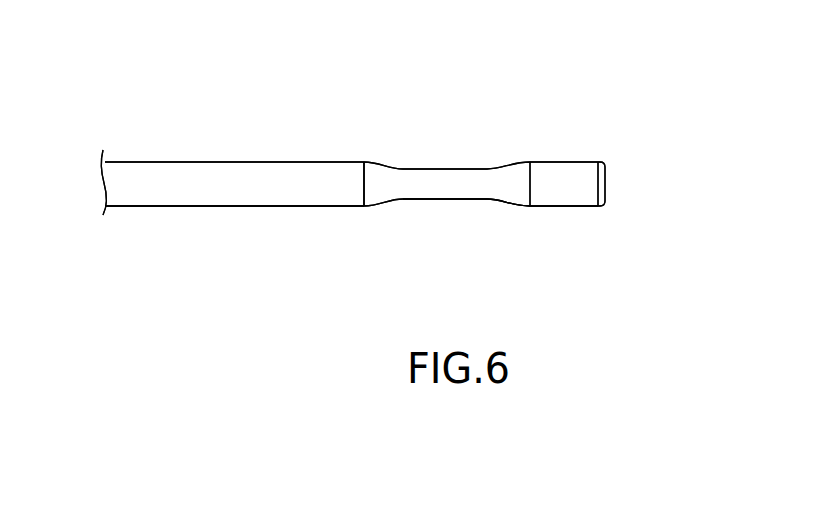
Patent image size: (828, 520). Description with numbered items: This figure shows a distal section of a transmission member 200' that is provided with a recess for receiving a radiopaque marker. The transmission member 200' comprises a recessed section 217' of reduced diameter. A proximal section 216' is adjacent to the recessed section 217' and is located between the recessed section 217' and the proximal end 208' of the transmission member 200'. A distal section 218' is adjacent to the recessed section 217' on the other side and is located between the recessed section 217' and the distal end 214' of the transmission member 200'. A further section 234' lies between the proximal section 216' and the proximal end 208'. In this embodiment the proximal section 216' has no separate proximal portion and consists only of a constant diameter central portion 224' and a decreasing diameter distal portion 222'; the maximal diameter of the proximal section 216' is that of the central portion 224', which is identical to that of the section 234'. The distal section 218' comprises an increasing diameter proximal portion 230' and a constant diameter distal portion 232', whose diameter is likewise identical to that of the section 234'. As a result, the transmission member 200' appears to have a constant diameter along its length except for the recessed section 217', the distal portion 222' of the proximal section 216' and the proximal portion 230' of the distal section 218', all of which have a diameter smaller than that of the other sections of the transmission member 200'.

The transmission member 200' is at (383, 126).
The proximal end 208' is at (70, 214).
The distal end 214' is at (648, 211).
The proximal section 216' is at (413, 136).
The recessed section 217' is at (451, 131).
The distal section 218' is at (609, 146).
The decreasing diameter distal portion 222' is at (432, 249).
The constant diameter central portion 224' is at (234, 252).
The increasing diameter proximal portion 230' is at (504, 245).
The constant diameter distal portion 232' is at (575, 252).
The section 234' is at (234, 144).